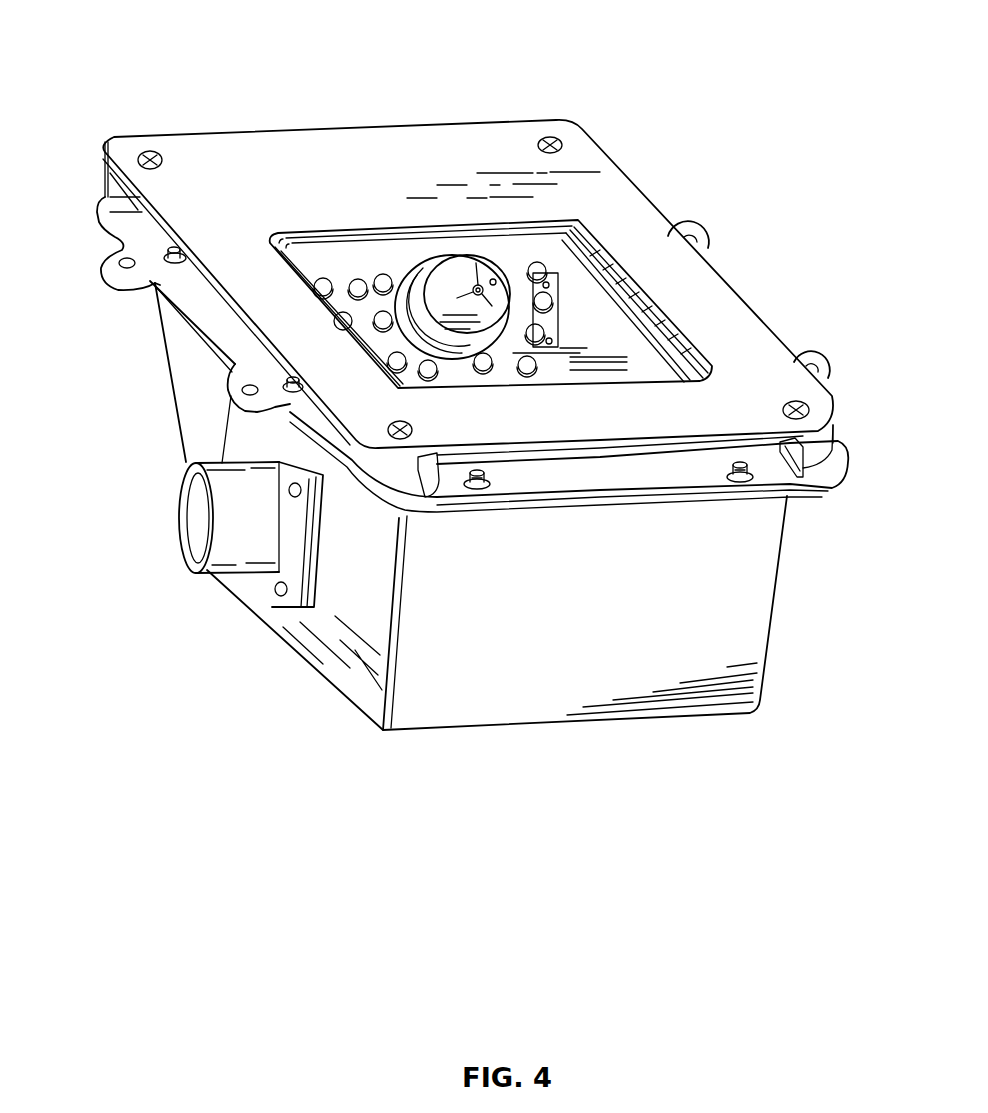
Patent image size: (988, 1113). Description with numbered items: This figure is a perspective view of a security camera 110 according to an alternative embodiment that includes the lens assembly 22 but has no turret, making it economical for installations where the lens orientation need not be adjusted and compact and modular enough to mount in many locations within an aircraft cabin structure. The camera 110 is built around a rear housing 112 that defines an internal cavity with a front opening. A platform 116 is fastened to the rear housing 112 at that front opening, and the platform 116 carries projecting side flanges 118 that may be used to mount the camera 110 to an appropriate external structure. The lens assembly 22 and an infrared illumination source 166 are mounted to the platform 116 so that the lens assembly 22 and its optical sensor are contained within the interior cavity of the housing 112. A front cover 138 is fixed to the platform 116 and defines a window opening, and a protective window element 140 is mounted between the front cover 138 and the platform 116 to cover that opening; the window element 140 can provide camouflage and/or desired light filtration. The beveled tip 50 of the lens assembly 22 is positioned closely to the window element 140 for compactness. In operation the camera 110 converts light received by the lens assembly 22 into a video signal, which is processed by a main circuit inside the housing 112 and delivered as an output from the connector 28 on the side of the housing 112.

The camera 110 is at (821, 66).
The rear housing 112 is at (742, 622).
The platform 116 is at (657, 478).
The projecting side flanges 118 is at (113, 247).
The front cover 138 is at (221, 152).
The protective window element 140 is at (663, 365).
The lens assembly 22 is at (426, 258).
The beveled tip 50 is at (466, 268).
The infrared illumination source 166 is at (548, 323).
The connector 28 is at (192, 508).